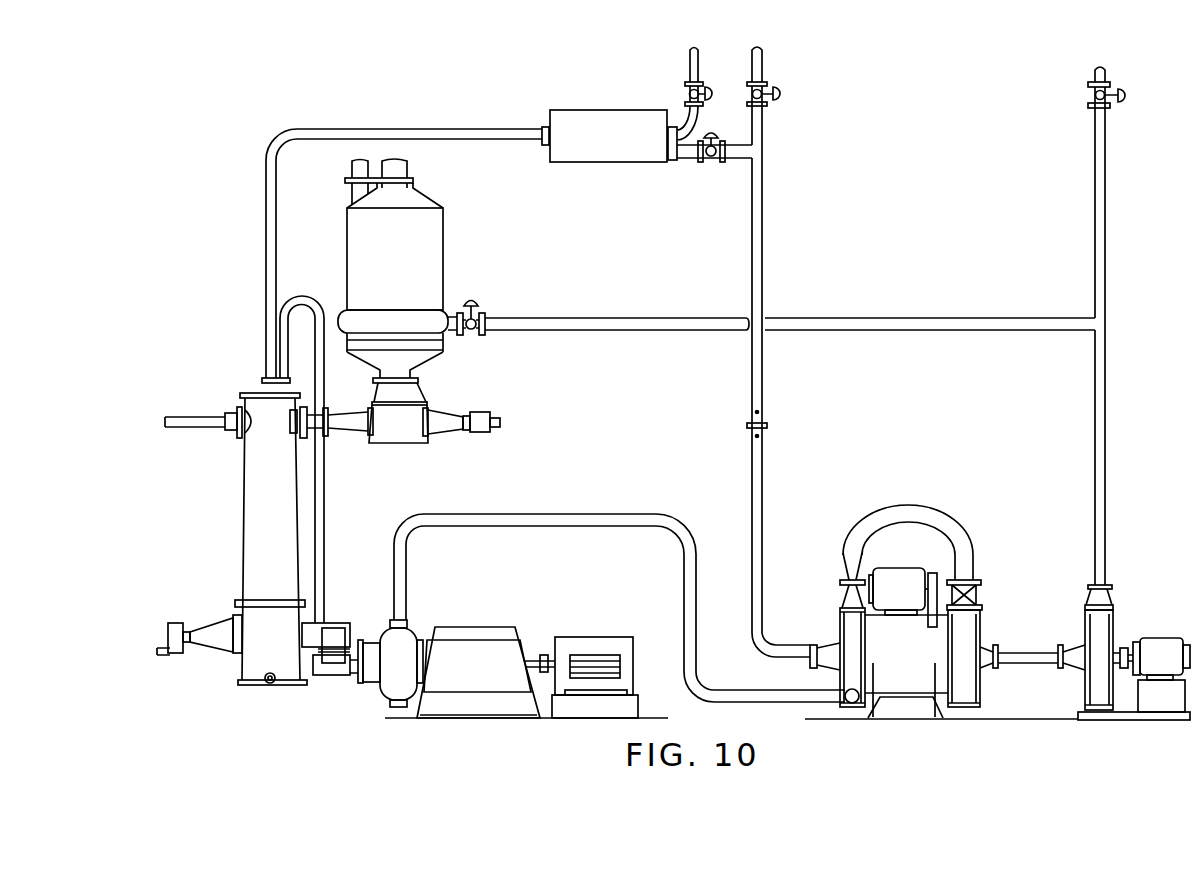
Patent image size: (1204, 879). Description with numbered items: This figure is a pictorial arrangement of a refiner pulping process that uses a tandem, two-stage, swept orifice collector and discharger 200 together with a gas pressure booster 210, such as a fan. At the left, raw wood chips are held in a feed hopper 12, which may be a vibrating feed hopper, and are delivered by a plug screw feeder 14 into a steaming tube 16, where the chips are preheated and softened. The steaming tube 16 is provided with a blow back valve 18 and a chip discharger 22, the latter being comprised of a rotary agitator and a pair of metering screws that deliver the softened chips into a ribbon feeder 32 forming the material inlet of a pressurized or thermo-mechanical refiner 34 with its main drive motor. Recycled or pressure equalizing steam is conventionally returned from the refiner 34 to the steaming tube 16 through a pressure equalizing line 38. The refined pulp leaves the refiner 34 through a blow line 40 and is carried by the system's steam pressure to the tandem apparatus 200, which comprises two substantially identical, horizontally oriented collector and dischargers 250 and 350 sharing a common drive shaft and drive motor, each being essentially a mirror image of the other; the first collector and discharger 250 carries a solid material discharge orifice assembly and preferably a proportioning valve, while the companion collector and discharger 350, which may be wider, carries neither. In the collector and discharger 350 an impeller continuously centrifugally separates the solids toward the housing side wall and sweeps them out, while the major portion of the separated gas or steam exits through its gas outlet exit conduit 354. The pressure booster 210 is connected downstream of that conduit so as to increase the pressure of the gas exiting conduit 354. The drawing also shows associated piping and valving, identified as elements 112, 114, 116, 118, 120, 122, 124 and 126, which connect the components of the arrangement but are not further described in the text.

The feed hopper 12 is at (445, 249).
The plug screw feeder 14 is at (448, 408).
The steaming tube 16 is at (245, 488).
The blow back valve 18 is at (228, 410).
The chip discharger 22 is at (212, 612).
The ribbon feeder 32 is at (343, 674).
The refiner 34 is at (413, 627).
The pressure equalizing line 38 is at (325, 493).
The blow line 40 is at (562, 511).
The supply pipe 112 is at (762, 381).
The valve 114 is at (713, 132).
The tank 116 is at (604, 110).
The valve 118 is at (681, 130).
The valve 120 is at (775, 88).
The supply pipe 122 is at (1105, 381).
The valve 124 is at (478, 297).
The valve 126 is at (1125, 89).
The tandem swept orifice collector and discharger 200 is at (928, 560).
The gas pressure booster 210 is at (1126, 620).
The collector and discharger 250 is at (837, 617).
The collector and discharger 350 is at (994, 620).
The gas outlet exit conduit 354 is at (990, 668).